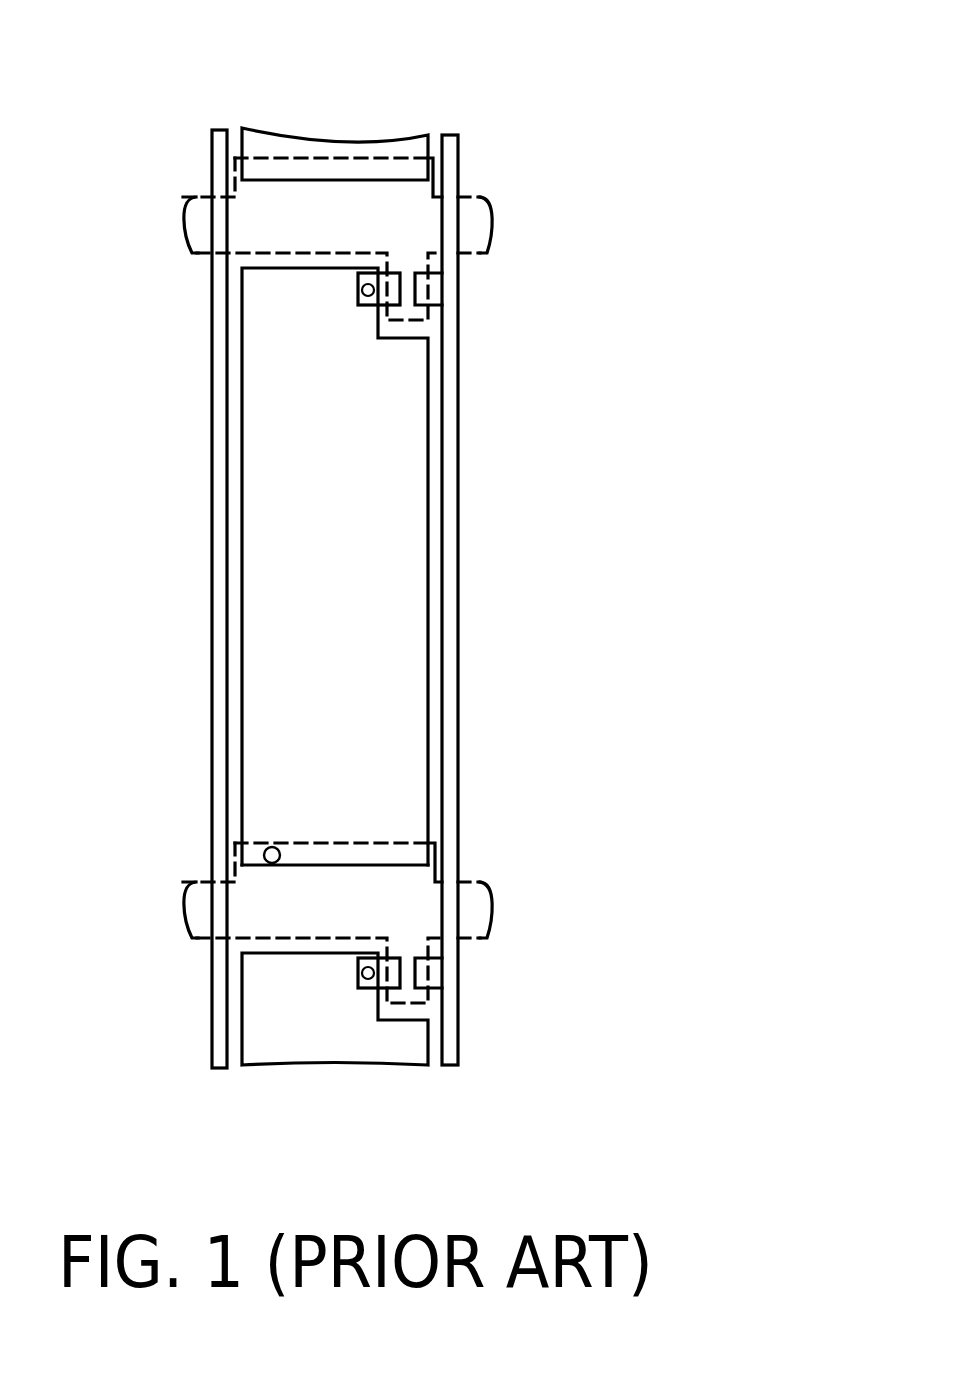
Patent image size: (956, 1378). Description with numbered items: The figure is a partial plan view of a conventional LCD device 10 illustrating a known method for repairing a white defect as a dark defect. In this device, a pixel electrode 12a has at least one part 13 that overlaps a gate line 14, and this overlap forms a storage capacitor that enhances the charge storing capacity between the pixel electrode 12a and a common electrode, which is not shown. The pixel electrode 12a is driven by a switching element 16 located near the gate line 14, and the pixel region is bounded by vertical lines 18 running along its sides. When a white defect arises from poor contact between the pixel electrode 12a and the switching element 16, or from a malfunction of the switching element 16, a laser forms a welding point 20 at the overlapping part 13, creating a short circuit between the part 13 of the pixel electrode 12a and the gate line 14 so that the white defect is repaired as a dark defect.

The LCD device 10 is at (593, 70).
The pixel electrode 12a is at (382, 530).
The part 13 is at (352, 855).
The gate line 14 is at (312, 840).
The switching element 16 is at (408, 987).
The data line 18 is at (448, 598).
The welding point 20 is at (263, 855).